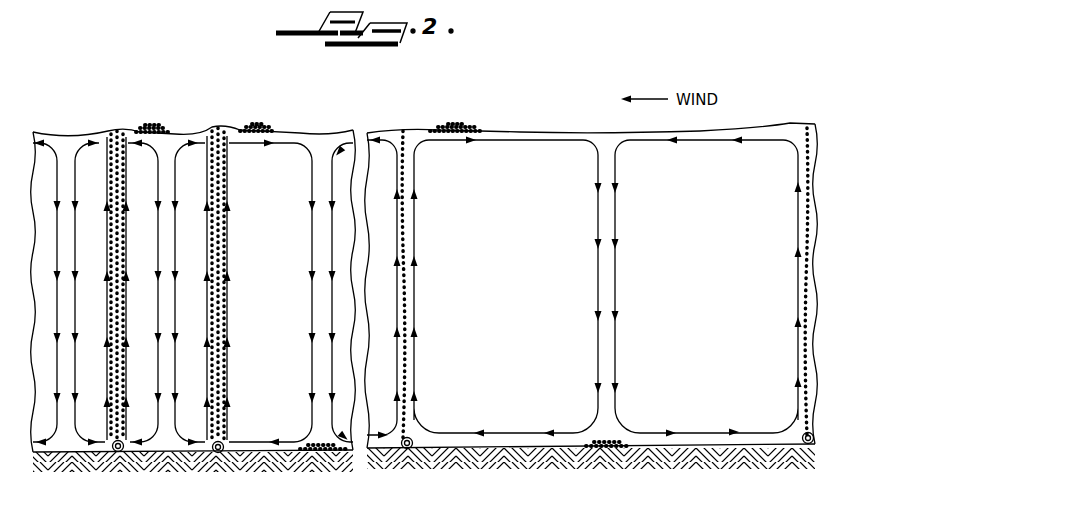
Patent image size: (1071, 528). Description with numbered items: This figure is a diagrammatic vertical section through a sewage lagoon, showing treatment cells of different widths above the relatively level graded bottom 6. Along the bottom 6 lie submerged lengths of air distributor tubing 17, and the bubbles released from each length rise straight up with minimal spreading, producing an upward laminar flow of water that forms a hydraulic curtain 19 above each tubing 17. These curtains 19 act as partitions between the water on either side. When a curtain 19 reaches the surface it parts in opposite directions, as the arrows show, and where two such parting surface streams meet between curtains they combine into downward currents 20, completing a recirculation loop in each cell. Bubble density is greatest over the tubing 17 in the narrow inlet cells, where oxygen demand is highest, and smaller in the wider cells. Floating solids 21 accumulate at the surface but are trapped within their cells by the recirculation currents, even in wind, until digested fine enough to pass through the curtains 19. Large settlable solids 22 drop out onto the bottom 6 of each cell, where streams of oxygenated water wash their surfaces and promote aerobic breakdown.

The bottom 6 is at (490, 446).
The air distributor tubing 17 is at (114, 452).
The hydraulic curtain 19 is at (121, 237).
The downward current 20 is at (68, 252).
The floating solids 21 is at (152, 128).
The settlable solids 22 is at (192, 455).